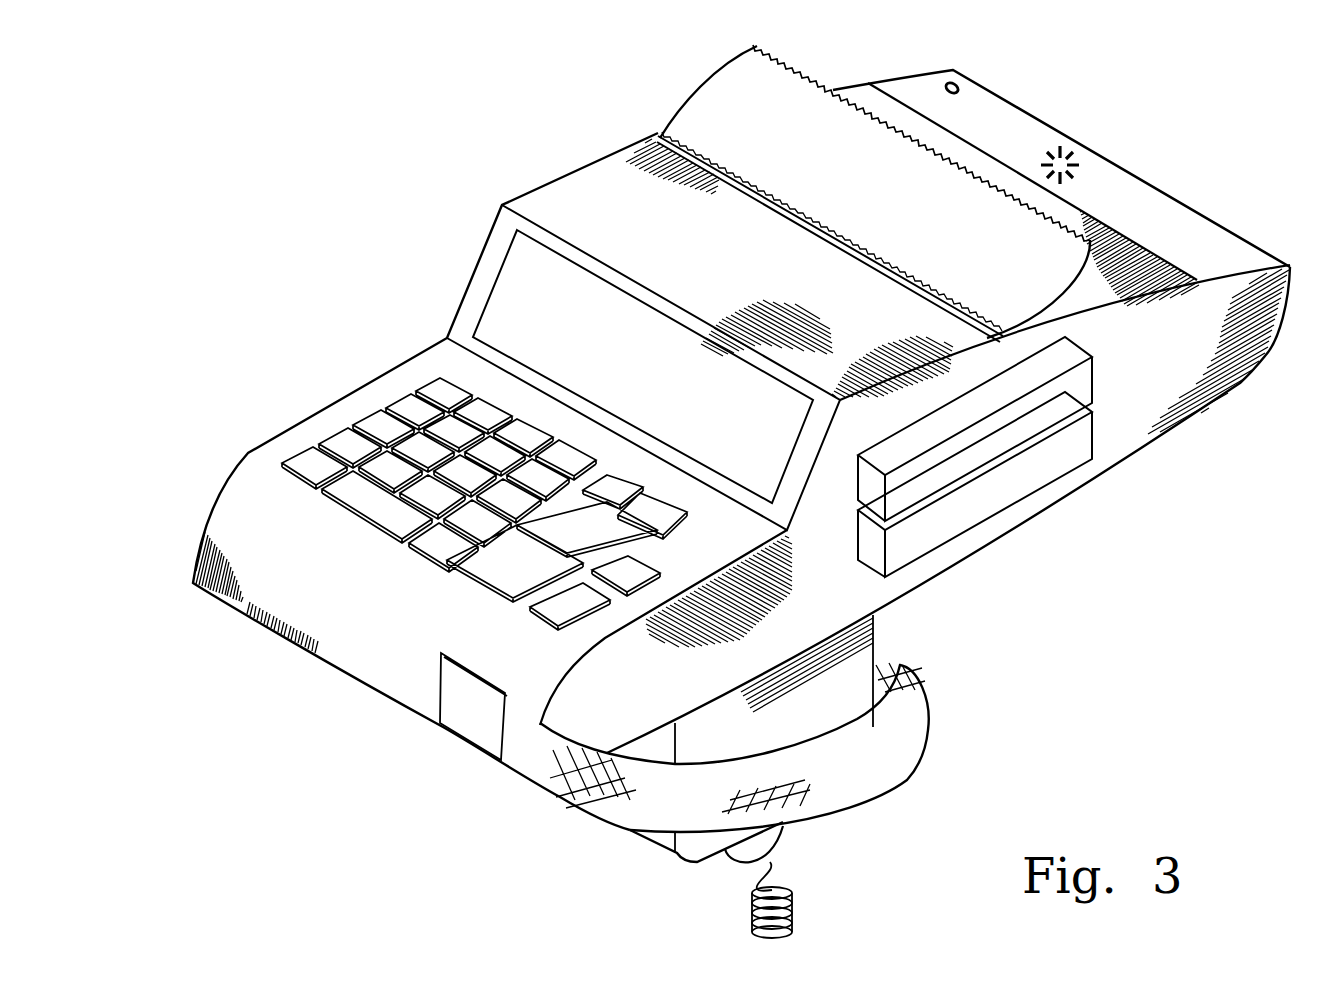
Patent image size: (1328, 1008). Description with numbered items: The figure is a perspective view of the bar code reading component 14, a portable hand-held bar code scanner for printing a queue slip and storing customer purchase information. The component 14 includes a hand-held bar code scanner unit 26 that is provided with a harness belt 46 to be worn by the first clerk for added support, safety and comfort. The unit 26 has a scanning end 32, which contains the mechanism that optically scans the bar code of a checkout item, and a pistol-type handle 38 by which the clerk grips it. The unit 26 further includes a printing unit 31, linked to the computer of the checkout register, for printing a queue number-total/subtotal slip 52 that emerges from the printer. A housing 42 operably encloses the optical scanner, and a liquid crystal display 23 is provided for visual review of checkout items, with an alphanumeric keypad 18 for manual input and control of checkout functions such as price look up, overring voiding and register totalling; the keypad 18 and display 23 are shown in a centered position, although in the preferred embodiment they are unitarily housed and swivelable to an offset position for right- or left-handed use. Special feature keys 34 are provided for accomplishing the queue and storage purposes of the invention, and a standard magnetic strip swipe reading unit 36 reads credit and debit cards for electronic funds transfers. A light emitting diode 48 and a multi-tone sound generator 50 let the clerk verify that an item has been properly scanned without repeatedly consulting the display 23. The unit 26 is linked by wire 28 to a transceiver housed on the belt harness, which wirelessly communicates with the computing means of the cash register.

The bar code reading component 14 is at (340, 265).
The keypad 18 is at (335, 432).
The liquid crystal display 23 is at (498, 292).
The hand-held bar code scanner unit 26 is at (360, 697).
The wire 28 is at (793, 913).
The printing unit 31 is at (657, 136).
The scanning end 32 is at (1208, 216).
The special feature keys 34 is at (653, 570).
The magnetic strip swipe reading unit 36 is at (988, 512).
The pistol-type handle 38 is at (650, 840).
The housing 42 is at (1168, 362).
The harness belt 46 is at (878, 784).
The light emitting diode 48 is at (964, 91).
The multi-tone sound generator 50 is at (1080, 160).
The queue number-total/subtotal slip 52 is at (703, 100).